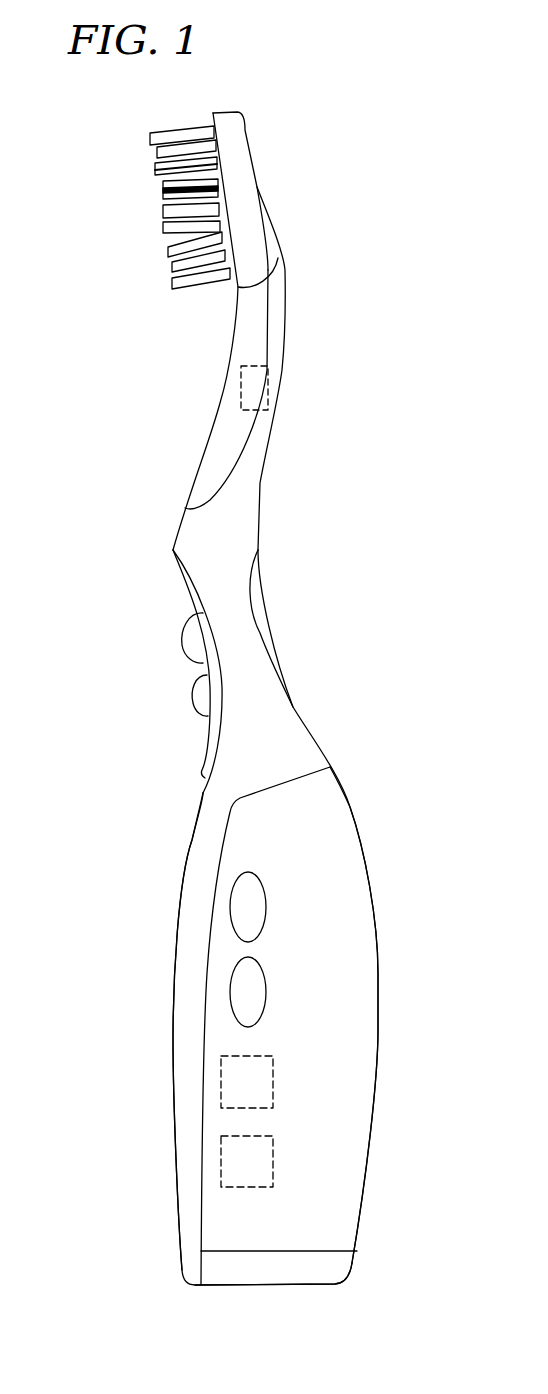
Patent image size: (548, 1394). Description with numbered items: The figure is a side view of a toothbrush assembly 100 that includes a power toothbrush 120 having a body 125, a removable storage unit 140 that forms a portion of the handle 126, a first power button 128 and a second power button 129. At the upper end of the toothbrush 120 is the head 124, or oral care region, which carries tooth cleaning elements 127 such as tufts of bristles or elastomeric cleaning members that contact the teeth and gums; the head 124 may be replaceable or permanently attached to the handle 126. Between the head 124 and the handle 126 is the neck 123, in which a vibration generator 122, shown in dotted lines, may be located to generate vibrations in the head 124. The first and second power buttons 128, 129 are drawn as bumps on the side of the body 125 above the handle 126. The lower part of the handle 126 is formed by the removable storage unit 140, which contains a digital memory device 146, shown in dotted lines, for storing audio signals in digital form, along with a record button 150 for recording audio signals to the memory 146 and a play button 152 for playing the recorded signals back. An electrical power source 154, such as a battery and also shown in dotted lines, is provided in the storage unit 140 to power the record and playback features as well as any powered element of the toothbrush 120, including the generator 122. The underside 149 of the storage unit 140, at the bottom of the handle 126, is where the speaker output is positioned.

The toothbrush assembly 100 is at (342, 214).
The power toothbrush 120 is at (280, 380).
The vibration generator 122 is at (241, 388).
The neck 123 is at (230, 337).
The head 124 is at (242, 142).
The body 125 is at (213, 797).
The handle 126 is at (150, 968).
The tooth cleaning elements 127 is at (157, 168).
The first power button 128 is at (183, 627).
The second power button 129 is at (193, 690).
The removable storage unit 140 is at (367, 1127).
The digital memory device 146 is at (221, 1082).
The underside 149 is at (260, 1285).
The record button 150 is at (266, 907).
The play button 152 is at (266, 993).
The electrical power source 154 is at (221, 1160).